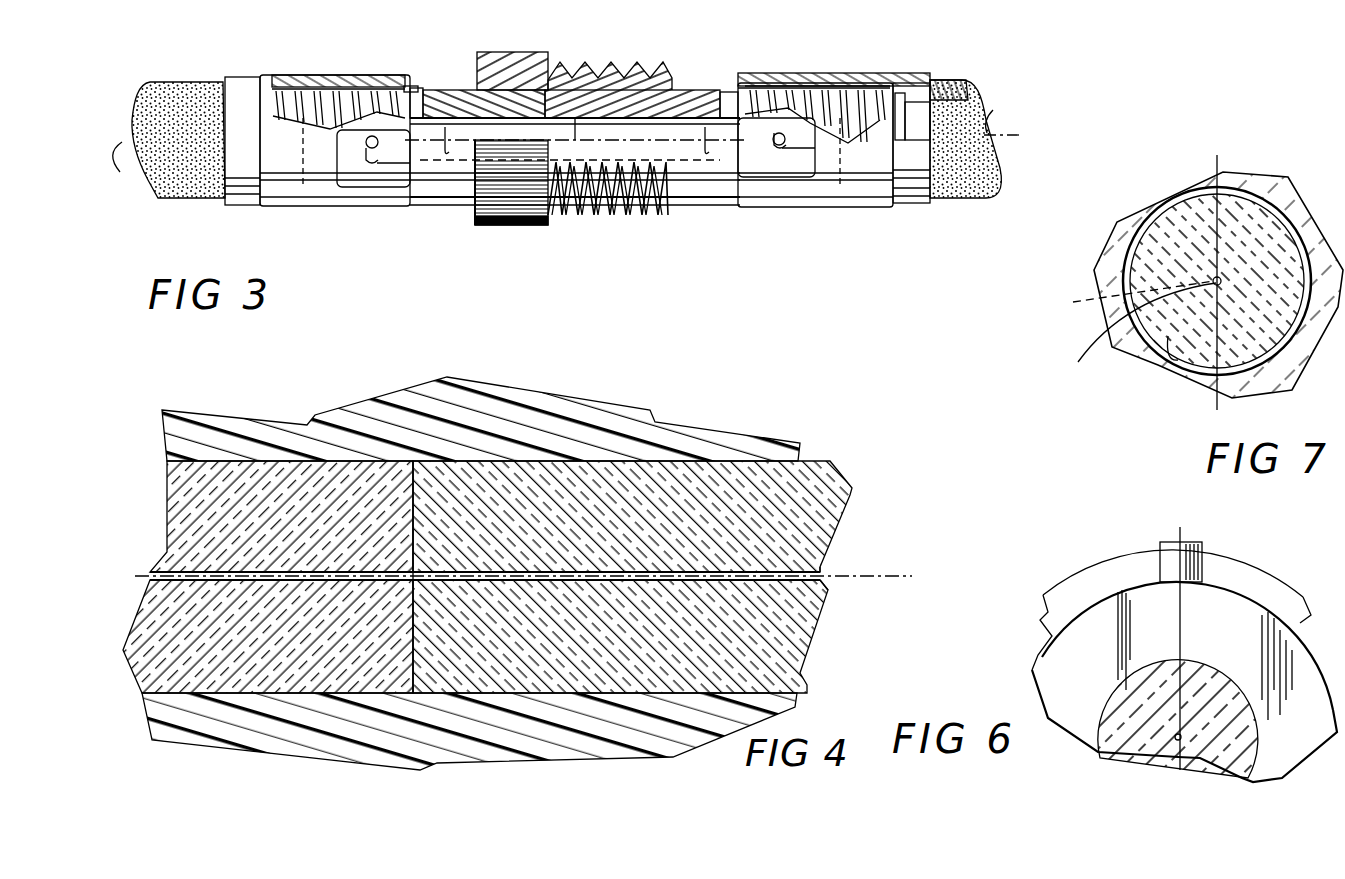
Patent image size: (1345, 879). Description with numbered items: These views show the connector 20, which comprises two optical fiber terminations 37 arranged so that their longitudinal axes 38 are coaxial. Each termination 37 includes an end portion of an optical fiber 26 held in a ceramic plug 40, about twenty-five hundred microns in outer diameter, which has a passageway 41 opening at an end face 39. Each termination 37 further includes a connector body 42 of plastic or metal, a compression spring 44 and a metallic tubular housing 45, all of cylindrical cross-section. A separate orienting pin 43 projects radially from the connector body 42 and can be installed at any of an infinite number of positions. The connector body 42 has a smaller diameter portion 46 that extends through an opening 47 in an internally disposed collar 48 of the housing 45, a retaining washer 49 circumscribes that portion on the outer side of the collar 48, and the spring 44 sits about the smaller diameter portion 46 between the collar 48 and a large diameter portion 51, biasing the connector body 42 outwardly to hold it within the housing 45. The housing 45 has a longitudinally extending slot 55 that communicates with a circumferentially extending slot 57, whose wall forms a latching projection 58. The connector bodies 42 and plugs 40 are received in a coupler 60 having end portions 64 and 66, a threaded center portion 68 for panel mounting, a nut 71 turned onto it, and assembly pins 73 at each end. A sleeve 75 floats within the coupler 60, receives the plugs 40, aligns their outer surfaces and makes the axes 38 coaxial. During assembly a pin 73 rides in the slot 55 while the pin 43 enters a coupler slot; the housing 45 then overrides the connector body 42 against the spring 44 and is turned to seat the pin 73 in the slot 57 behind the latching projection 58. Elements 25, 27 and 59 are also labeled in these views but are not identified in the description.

In FIG. 3, the connector 20 is at (371, 250).
In FIG. 4, the slot 25 is at (150, 579).
In FIG. 7, the slot 25 is at (1130, 330).
In FIG. 4, the optical fiber 26 is at (825, 582).
In FIG. 6, the optical fiber 26 is at (1174, 742).
In FIG. 7, the ring 27 is at (1176, 195).
In FIG. 3, the optical fiber termination 37 is at (262, 207).
In FIG. 3, the longitudinal axis 38 is at (567, 138).
In FIG. 4, the longitudinal axis 38 is at (870, 573).
In FIG. 4, the end face 39 is at (415, 495).
In FIG. 3, the plug 40 is at (575, 161).
In FIG. 4, the plug 40 is at (265, 459).
In FIG. 7, the plug 40 is at (1276, 184).
In FIG. 6, the plug 40 is at (1204, 670).
In FIG. 4, the passageway 41 is at (822, 574).
In FIG. 7, the passageway 41 is at (1176, 342).
In FIG. 3, the connector body 42 is at (735, 158).
In FIG. 6, the connector body 42 is at (1043, 656).
In FIG. 3, the orienting pin 43 is at (410, 86).
In FIG. 6, the orienting pin 43 is at (1188, 545).
In FIG. 3, the compression spring 44 is at (297, 114).
In FIG. 3, the tubular housing 45 is at (315, 76).
In FIG. 3, the smaller diameter portion 46 is at (312, 119).
In FIG. 3, the opening 47 is at (940, 80).
In FIG. 3, the collar 48 is at (897, 94).
In FIG. 3, the retaining washer 49 is at (906, 123).
In FIG. 3, the large diameter portion 51 is at (757, 80).
In FIG. 3, the longitudinally extending slot 55 is at (346, 207).
In FIG. 3, the circumferentially extending slot 57 is at (340, 145).
In FIG. 3, the latching projection 58 is at (368, 148).
In FIG. 3, the end cap 59 is at (170, 88).
In FIG. 3, the coupler 60 is at (471, 232).
In FIG. 3, the end portion 64 is at (425, 90).
In FIG. 3, the end portion 66 is at (677, 84).
In FIG. 3, the center portion 68 is at (597, 207).
In FIG. 3, the nut 71 is at (502, 222).
In FIG. 3, the assembly pin 73 is at (375, 137).
In FIG. 3, the sleeve 75 is at (537, 90).
In FIG. 4, the sleeve 75 is at (593, 410).